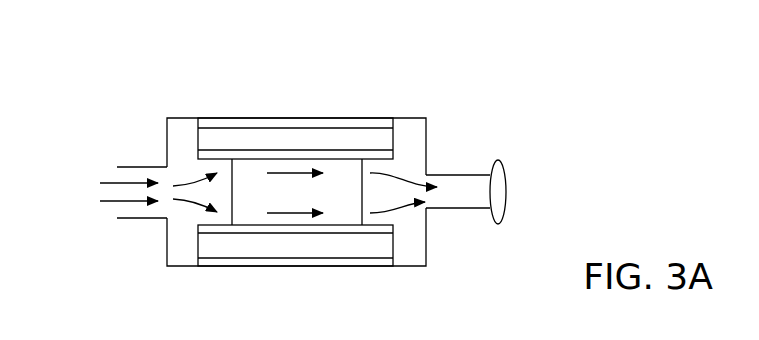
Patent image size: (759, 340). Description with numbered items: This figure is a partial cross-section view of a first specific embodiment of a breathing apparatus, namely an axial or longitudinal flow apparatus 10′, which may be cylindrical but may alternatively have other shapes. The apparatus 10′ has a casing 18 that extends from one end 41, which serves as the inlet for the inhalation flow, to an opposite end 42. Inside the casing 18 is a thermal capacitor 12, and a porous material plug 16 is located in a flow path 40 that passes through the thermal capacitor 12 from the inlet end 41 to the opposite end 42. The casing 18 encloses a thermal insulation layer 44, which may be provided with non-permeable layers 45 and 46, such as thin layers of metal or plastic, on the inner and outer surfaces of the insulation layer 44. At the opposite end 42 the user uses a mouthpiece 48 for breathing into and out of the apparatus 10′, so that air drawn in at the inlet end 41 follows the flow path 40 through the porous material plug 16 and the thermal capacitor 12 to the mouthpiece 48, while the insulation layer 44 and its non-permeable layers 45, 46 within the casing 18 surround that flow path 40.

The axial flow apparatus 10′ is at (173, 83).
The thermal capacitor 12 is at (250, 98).
The porous material plug 16 is at (245, 210).
The casing 18 is at (182, 267).
The flow path 40 is at (132, 201).
The end 41 is at (137, 168).
The opposite end 42 is at (462, 175).
The thermal insulation layer 44 is at (287, 138).
The non-permeable layer 45 is at (385, 157).
The non-permeable layer 46 is at (358, 122).
The mouthpiece 48 is at (497, 192).